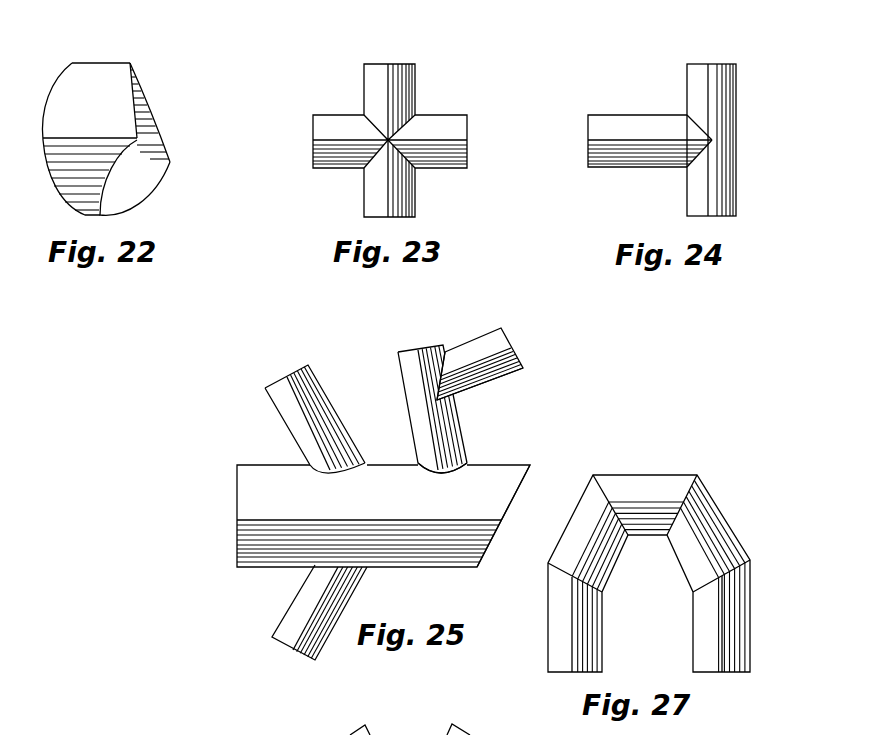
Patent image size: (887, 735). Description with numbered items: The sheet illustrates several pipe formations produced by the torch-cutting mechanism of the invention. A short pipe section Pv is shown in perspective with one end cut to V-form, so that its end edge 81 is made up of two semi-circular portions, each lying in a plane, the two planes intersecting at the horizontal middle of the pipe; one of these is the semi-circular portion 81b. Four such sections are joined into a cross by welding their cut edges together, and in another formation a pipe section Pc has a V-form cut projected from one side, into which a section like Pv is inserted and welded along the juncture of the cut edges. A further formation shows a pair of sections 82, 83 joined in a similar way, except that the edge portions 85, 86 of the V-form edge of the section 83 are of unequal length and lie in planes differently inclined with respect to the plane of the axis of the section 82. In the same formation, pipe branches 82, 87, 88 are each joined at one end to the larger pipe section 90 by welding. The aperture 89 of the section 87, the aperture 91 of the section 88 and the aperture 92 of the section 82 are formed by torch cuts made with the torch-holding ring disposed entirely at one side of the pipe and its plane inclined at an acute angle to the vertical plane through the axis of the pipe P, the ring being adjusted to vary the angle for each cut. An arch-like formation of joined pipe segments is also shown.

In FIG. 22, the pipe section Pv is at (85, 102).
In FIG. 24, the pipe section Pv is at (620, 132).
In FIG. 24, the pipe section Pc is at (698, 104).
In FIG. 25, the pipe P is at (265, 490).
In FIG. 22, the cut edge 81 is at (150, 107).
In FIG. 23, the cut edge 81 is at (376, 122).
In FIG. 24, the cut edge 81 is at (700, 122).
In FIG. 22, the semi-circular portion 81b is at (127, 150).
In FIG. 23, the semi-circular portion 81b is at (377, 163).
In FIG. 24, the semi-circular portion 81b is at (697, 165).
In FIG. 22, the pipe section 83 is at (158, 128).
In FIG. 25, the pipe section 83 is at (492, 352).
In FIG. 25, the pipe section 82 is at (412, 372).
In FIG. 25, the edge portion 85 is at (485, 393).
In FIG. 25, the edge portion 86 is at (458, 412).
In FIG. 25, the pipe branch 87 is at (307, 368).
In FIG. 25, the pipe branch 88 is at (298, 608).
In FIG. 25, the aperture 89 is at (327, 472).
In FIG. 25, the larger pipe section 90 is at (422, 502).
In FIG. 25, the aperture 91 is at (334, 640).
In FIG. 25, the aperture 92 is at (425, 464).